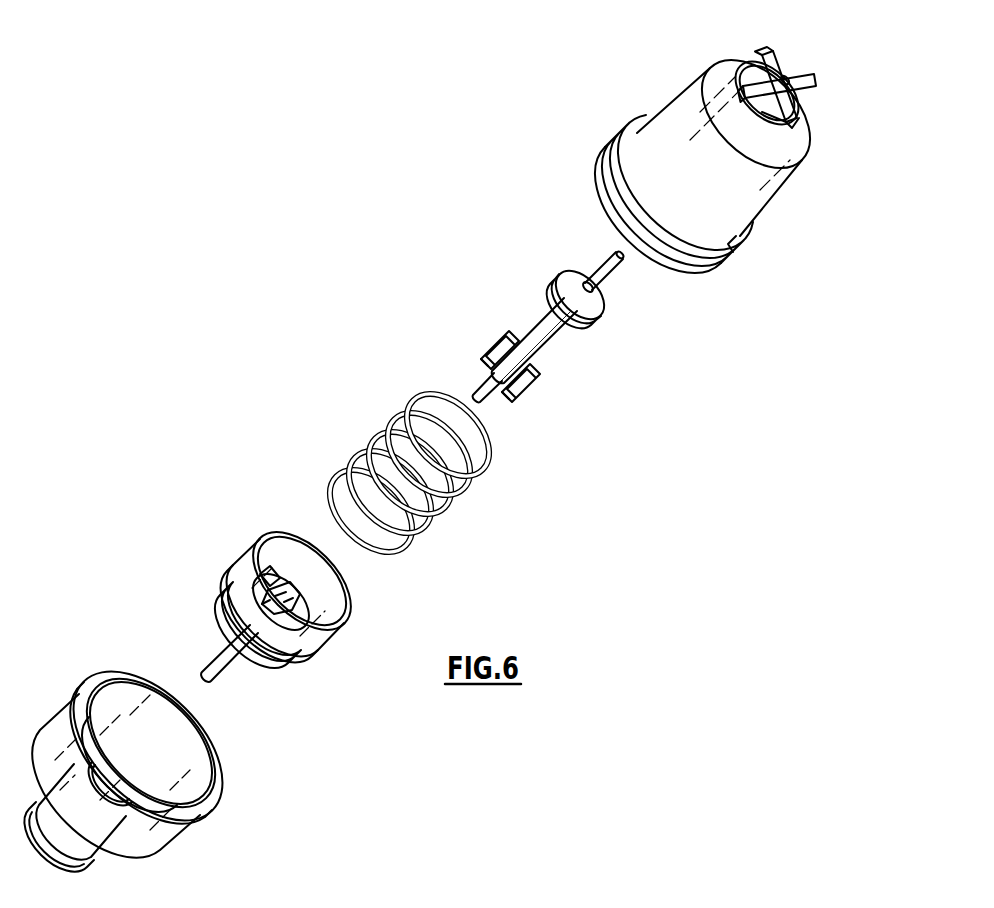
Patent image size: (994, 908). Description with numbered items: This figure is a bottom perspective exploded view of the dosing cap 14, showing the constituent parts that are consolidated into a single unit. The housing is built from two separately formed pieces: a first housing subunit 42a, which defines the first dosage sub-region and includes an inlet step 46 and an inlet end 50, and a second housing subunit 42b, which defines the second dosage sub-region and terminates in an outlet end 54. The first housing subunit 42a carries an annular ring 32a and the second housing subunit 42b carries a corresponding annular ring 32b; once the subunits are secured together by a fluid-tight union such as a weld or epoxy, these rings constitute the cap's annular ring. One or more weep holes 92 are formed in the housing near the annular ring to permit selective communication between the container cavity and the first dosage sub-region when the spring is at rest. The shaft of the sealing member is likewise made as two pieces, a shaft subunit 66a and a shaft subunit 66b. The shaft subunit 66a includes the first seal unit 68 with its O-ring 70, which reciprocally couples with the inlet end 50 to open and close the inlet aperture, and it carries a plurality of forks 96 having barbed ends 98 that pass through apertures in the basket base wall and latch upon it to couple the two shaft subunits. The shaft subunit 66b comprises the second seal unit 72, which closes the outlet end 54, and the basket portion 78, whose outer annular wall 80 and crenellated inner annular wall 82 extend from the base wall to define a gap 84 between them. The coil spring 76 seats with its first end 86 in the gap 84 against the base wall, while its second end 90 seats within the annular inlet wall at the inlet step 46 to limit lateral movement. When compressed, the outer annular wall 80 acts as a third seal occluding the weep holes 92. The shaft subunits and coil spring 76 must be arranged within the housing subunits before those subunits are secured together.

The dosing cap 14 is at (296, 274).
The annular ring 32a is at (600, 180).
The annular ring 32b is at (214, 790).
The first housing subunit 42a is at (770, 198).
The second housing subunit 42b is at (182, 826).
The inlet step 46 is at (798, 140).
The inlet end 50 is at (733, 90).
The outlet end 54 is at (90, 838).
The shaft subunit 66a is at (542, 352).
The shaft subunit 66b is at (248, 662).
The first seal unit 68 is at (600, 300).
The O-ring 70 is at (587, 318).
The second seal unit 72 is at (208, 639).
The coil spring 76 is at (411, 459).
The basket portion 78 is at (333, 640).
The outer annular wall 80 is at (240, 566).
The crenellated inner annular wall 82 is at (315, 590).
The gap 84 is at (278, 556).
The first end 86 is at (335, 490).
The second end 90 is at (432, 395).
The weep holes 92 is at (732, 244).
The forks 96 is at (500, 340).
The barbed ends 98 is at (490, 366).